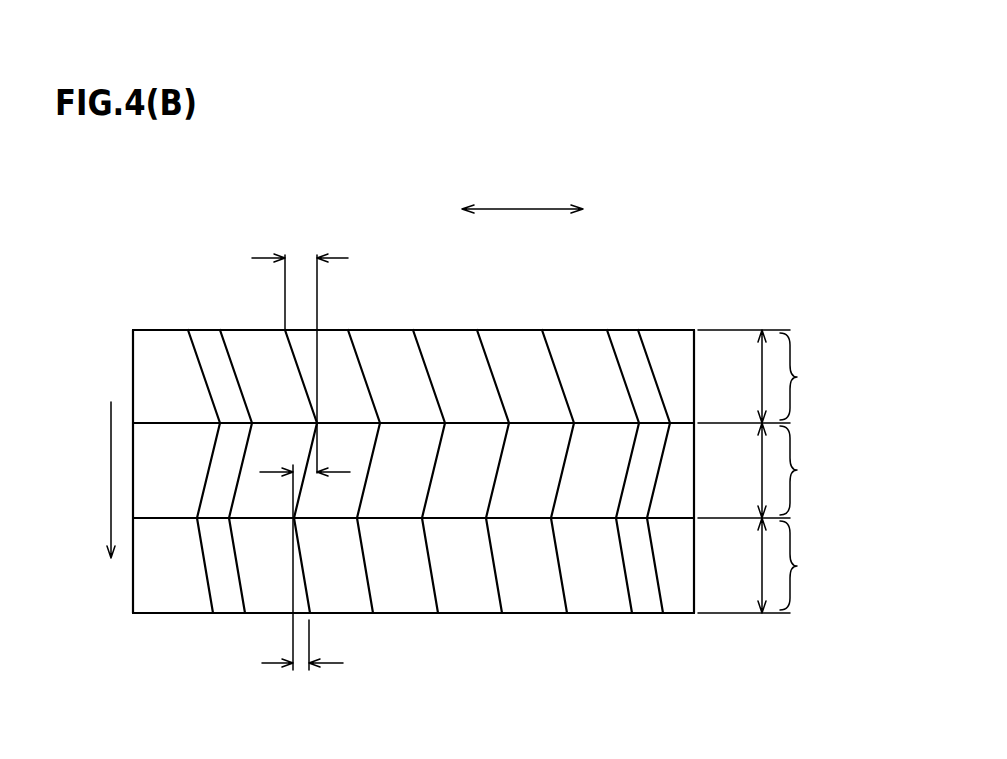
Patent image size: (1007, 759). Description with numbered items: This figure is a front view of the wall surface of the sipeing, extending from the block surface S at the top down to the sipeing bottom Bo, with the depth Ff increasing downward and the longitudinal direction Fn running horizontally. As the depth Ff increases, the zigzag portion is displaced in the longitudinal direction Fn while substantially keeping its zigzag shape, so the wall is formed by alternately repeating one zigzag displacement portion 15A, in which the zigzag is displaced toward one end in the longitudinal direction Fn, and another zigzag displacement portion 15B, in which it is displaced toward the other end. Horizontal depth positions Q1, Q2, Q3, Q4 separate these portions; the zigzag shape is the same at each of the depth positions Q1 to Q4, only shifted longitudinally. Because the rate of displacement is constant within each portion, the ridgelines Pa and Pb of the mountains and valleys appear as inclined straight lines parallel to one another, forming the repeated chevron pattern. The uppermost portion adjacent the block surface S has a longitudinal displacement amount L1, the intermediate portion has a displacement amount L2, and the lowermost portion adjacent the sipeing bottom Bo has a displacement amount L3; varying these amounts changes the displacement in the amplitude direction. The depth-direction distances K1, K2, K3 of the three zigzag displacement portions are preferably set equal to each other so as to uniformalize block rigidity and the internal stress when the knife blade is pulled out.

The ridgeline Pa is at (300, 377).
The ridgeline Pb is at (365, 370).
The block surface S is at (512, 330).
The sipeing bottom Bo is at (523, 614).
The depth position Q1 is at (712, 330).
The depth position Q2 is at (712, 423).
The depth position Q3 is at (712, 518).
The depth position Q4 is at (712, 613).
The distance in the depth direction K1 is at (764, 376).
The distance in the depth direction K2 is at (780, 470).
The distance in the depth direction K3 is at (780, 565).
The displacement amount L1 is at (300, 350).
The displacement amount L2 is at (305, 477).
The displacement amount L3 is at (302, 656).
The longitudinal direction Fn is at (522, 209).
The depth Ff is at (111, 480).
The zigzag displacement portion 15A is at (826, 471).
The zigzag displacement portion 15B is at (828, 470).